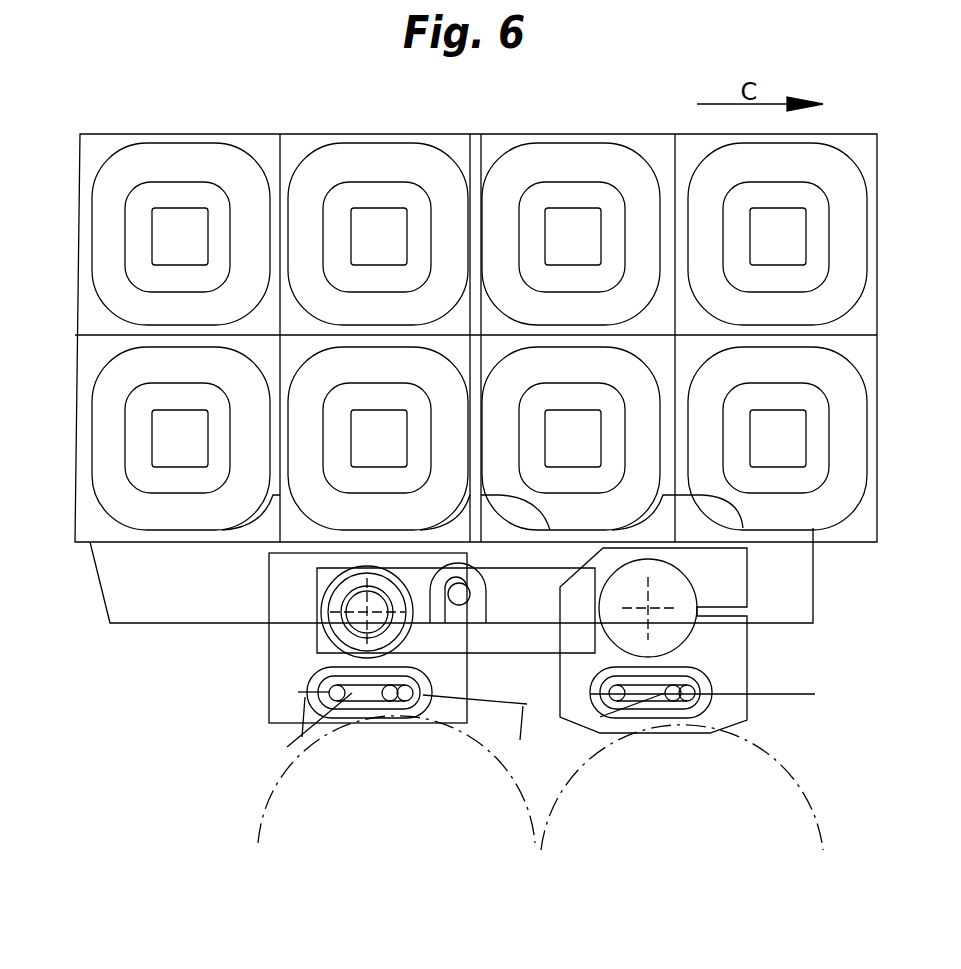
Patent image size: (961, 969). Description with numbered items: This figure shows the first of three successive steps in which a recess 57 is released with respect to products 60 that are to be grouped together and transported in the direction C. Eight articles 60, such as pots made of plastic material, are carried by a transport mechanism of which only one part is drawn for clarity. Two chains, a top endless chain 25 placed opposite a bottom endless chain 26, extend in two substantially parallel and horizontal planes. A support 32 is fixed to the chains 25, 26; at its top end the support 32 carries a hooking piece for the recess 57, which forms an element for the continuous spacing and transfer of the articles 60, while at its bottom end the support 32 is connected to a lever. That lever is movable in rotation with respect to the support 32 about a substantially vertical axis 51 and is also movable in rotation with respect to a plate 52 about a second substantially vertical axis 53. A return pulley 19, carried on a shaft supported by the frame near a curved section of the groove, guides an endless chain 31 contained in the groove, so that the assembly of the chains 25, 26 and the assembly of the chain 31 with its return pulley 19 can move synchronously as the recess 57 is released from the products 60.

The products 60 is at (228, 175).
The recess 57 is at (147, 560).
The support 32 is at (295, 575).
The substantially vertical axis 51 is at (360, 616).
The top endless chain 25 is at (350, 708).
The bottom endless chain 26 is at (293, 685).
The plate 52 is at (767, 585).
The substantially vertical axis 53 is at (665, 600).
The endless chain 31 is at (783, 692).
The return pulley 19 is at (818, 752).